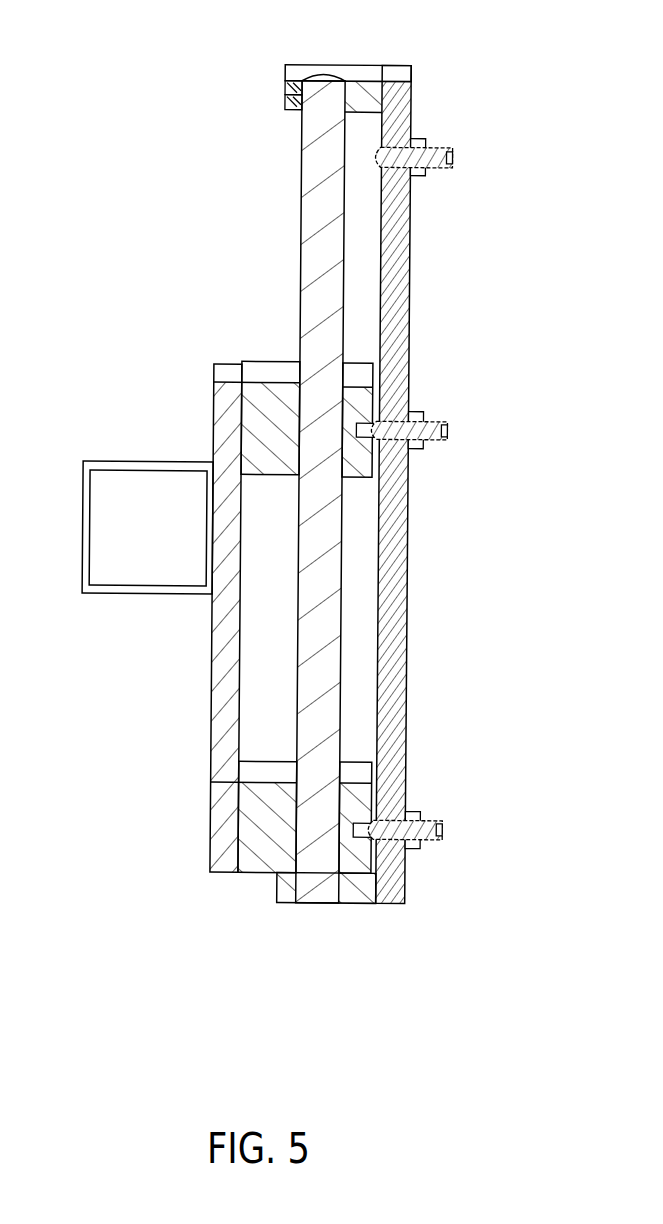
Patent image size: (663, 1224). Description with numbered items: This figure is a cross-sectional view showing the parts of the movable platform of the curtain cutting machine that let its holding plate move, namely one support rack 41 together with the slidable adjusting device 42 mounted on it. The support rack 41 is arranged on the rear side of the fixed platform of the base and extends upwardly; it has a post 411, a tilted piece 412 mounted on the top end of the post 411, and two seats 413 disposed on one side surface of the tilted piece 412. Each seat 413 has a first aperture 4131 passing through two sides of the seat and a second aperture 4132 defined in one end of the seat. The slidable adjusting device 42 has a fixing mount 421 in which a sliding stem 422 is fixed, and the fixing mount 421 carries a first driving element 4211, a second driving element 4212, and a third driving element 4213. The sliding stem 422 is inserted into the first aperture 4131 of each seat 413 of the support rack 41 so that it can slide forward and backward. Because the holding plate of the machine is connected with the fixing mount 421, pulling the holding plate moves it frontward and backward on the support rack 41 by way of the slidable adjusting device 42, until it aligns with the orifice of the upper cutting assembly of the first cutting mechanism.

The support rack 41 is at (265, 623).
The post 411 is at (82, 537).
The tilted piece 412 is at (222, 398).
The seat 413 is at (274, 392).
The first aperture 4131 is at (338, 903).
The second aperture 4132 is at (360, 422).
The slidable adjusting device 42 is at (398, 64).
The fixing mount 421 is at (402, 542).
The sliding stem 422 is at (310, 158).
The first driving element 4211 is at (440, 840).
The second driving element 4212 is at (440, 440).
The third driving element 4213 is at (448, 148).